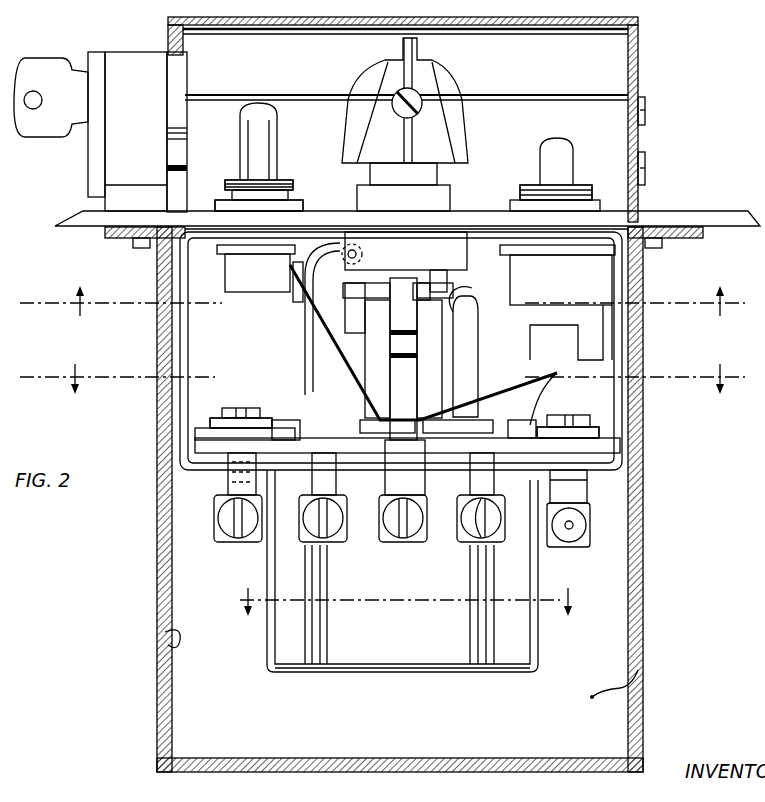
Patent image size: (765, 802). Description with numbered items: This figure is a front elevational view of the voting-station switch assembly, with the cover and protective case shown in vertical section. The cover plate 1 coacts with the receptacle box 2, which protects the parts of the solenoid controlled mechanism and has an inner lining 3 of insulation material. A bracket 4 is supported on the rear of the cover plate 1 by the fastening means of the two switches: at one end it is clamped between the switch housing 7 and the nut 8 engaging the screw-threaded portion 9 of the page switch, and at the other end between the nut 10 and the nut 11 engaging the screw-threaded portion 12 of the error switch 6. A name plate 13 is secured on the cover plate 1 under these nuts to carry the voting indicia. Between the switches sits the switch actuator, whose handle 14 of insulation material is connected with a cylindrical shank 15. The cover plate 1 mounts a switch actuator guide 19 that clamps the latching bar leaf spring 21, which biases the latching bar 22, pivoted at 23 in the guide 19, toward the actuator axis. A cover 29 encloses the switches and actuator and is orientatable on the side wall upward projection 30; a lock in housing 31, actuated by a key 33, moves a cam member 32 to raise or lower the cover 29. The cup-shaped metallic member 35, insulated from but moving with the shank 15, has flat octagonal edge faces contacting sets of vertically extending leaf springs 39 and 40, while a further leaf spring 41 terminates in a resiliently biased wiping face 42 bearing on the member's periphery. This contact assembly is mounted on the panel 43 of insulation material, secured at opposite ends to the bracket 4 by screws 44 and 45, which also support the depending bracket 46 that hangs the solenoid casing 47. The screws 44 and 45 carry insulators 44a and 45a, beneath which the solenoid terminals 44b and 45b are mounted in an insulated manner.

The cover plate 1 is at (703, 232).
The receptacle box 2 is at (158, 580).
The inner lining 3 is at (165, 632).
The bracket 4 is at (198, 335).
The error switch 6 is at (562, 165).
The switch housing 7 is at (258, 280).
The nut 8 is at (222, 200).
The screw-threaded portion 9 is at (240, 183).
The nut 10 is at (585, 280).
The nut 11 is at (524, 211).
The screw-threaded portion 12 is at (500, 138).
The name plate 13 is at (328, 212).
The switch actuator handle 14 is at (428, 90).
The cylindrical shank 15 is at (265, 143).
The switch actuator guide 19 is at (427, 243).
The latching bar leaf spring 21 is at (312, 352).
The latching bar 22 is at (318, 365).
The pivot 23 is at (358, 250).
The cover 29 is at (638, 50).
The side wall upward projection 30 is at (612, 115).
The lock housing 31 is at (135, 62).
The cam member 32 is at (180, 88).
The key 33 is at (42, 72).
The metallic member 35 is at (440, 292).
The leaf springs 39 is at (307, 440).
The leaf springs 40 is at (412, 395).
The leaf spring 41 is at (470, 365).
The wiping face 42 is at (470, 300).
The panel 43 is at (620, 447).
The screw 44 is at (253, 410).
The insulator 44a is at (210, 415).
The solenoid terminal 44b is at (292, 425).
The screw 45 is at (566, 418).
The insulator 45a is at (592, 432).
The solenoid terminal 45b is at (530, 425).
The depending bracket 46 is at (265, 633).
The solenoid casing 47 is at (450, 660).